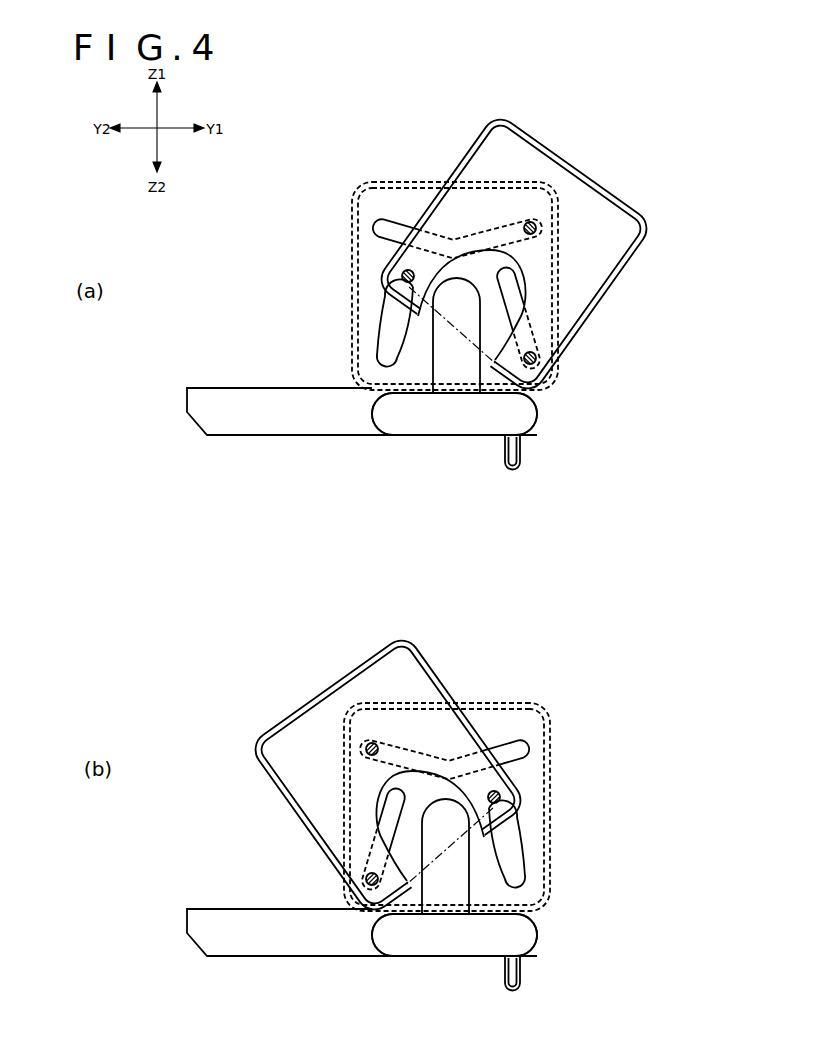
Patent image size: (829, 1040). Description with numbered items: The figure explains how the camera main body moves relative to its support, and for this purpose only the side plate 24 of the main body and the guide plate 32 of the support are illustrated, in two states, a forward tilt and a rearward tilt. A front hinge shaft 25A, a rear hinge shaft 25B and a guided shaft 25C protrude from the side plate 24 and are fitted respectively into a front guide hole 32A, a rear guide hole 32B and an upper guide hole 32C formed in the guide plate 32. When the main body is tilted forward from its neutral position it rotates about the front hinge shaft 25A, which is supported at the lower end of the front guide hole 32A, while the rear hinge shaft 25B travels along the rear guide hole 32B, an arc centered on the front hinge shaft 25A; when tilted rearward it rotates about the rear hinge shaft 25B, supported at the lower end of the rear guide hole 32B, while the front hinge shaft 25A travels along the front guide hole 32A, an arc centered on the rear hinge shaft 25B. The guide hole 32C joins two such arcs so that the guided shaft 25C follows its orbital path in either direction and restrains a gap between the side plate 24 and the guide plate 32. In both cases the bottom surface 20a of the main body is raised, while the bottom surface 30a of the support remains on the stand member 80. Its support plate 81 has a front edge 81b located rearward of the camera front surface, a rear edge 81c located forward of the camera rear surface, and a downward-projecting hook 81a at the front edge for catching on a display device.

The side plate 24 is at (650, 226).
The front hinge shaft 25A is at (537, 359).
The rear hinge shaft 25B is at (402, 275).
The guided shaft 25C is at (533, 223).
The guide plate 32 is at (352, 201).
The front guide hole 32A is at (536, 337).
The rear guide hole 32B is at (376, 347).
The guide hole 32C is at (443, 232).
The bottom surface of the support 30a is at (417, 394).
The bottom surface of the main body 20a is at (459, 347).
The stand member 80 is at (275, 442).
The support plate 81 is at (390, 424).
The hook 81a is at (519, 466).
The front edge 81b is at (537, 412).
The rear edge 81c is at (372, 412).